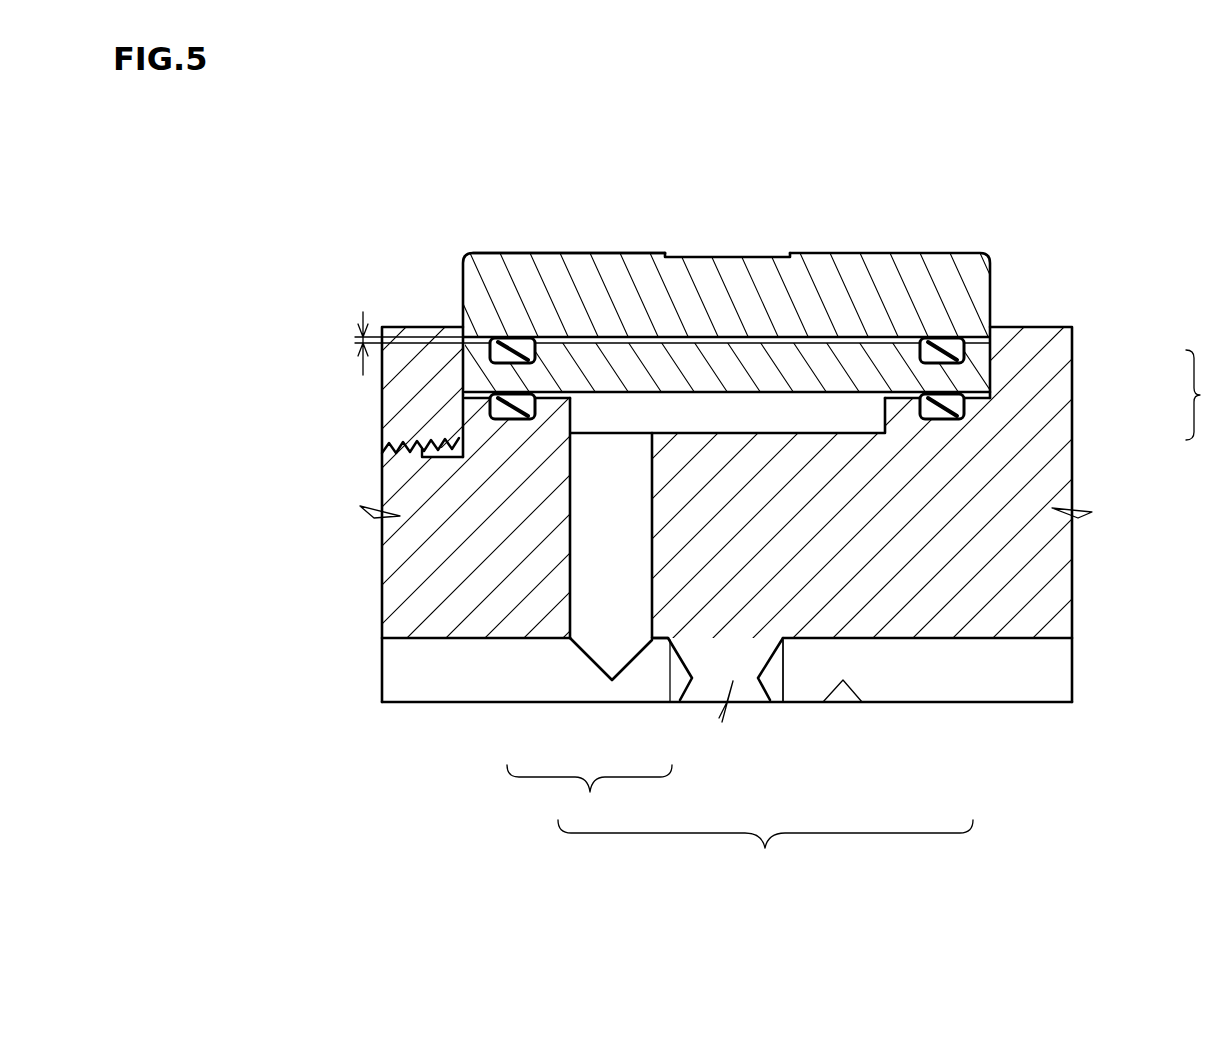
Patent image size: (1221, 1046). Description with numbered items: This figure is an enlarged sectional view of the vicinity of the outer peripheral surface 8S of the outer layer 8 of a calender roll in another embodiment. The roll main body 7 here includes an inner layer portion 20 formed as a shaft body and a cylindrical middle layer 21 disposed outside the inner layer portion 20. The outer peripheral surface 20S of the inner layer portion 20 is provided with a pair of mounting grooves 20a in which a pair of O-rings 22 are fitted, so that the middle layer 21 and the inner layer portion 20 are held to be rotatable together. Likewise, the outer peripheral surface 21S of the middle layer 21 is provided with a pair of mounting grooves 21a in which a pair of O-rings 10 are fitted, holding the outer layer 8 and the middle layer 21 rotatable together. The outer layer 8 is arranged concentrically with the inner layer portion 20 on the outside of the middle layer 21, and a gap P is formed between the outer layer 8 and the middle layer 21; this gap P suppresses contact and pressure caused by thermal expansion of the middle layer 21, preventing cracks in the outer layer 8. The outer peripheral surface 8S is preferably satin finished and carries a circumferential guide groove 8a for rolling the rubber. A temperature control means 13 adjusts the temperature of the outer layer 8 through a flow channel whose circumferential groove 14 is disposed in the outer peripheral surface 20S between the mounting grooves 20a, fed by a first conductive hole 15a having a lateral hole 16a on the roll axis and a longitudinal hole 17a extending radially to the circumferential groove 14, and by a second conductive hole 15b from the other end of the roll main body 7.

The roll main body 7 is at (1203, 395).
The outer layer 8 is at (718, 297).
The outer peripheral surface of the outer layer 8S is at (627, 253).
The guide groove 8a is at (762, 255).
The O-ring 10 is at (510, 347).
The temperature control means 13 is at (727, 780).
The circumferential groove 14 is at (728, 415).
The first conductive hole 15a is at (589, 732).
The second conductive hole 15b is at (916, 668).
The lateral hole 16a is at (528, 668).
The longitudinal hole 17a is at (620, 593).
The inner layer portion 20 is at (1015, 425).
The outer peripheral surface of the inner layer portion 20S is at (488, 397).
The mounting groove 20a is at (512, 420).
The middle layer 21 is at (973, 372).
The outer peripheral surface of the middle layer 21S is at (827, 343).
The mounting groove 21a is at (540, 372).
The O-ring 22 is at (500, 406).
The gap P is at (351, 343).